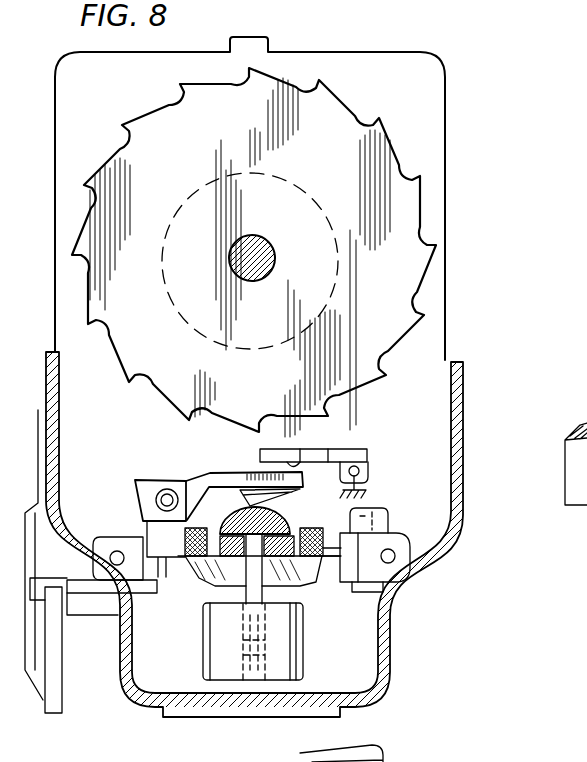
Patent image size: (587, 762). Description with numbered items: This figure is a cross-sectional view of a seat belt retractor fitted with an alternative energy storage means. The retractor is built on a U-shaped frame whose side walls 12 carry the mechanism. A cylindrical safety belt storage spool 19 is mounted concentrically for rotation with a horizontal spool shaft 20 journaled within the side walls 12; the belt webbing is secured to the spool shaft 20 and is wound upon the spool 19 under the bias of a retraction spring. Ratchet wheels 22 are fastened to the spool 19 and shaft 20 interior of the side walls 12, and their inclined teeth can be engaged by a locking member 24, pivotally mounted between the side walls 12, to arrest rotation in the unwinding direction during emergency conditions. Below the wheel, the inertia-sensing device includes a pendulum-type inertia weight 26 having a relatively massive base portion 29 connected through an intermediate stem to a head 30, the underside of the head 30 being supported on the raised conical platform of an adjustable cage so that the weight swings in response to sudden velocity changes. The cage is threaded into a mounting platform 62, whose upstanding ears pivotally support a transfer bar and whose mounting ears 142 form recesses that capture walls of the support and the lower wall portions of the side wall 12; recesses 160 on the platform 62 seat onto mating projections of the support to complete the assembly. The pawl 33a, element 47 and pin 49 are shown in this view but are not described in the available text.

The side walls 12 is at (432, 118).
The ratchet wheels 22 is at (375, 125).
The safety belt storage spool 19 is at (219, 134).
The spool shaft 20 is at (268, 275).
The pawl 33a is at (161, 480).
The pawl finger 47 is at (232, 498).
The locking member 24 is at (345, 447).
The pin 49 is at (300, 490).
The mounting platform 62 is at (386, 505).
The head 30 is at (284, 518).
The mounting ears 142 is at (405, 538).
The recesses 160 is at (117, 562).
The inertia weight 26 is at (205, 620).
The base portion 29 is at (292, 652).